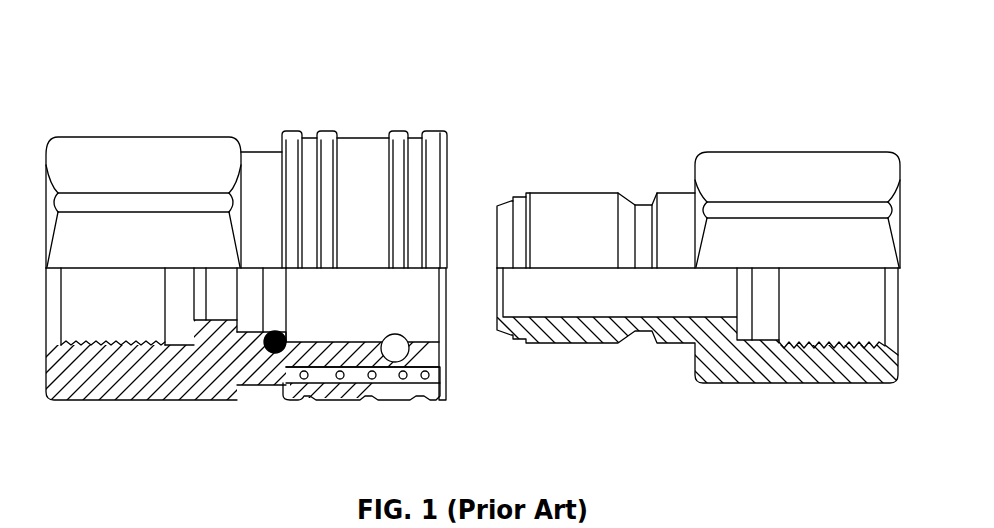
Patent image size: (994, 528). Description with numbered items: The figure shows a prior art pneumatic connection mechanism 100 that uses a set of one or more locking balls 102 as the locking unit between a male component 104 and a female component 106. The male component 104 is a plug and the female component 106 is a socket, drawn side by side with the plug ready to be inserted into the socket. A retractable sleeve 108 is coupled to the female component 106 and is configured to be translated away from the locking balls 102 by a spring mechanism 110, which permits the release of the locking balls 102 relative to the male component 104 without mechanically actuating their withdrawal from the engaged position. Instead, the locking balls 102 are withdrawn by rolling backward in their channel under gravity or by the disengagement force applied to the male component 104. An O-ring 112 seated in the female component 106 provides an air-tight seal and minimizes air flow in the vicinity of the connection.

The pneumatic connection mechanism 100 is at (214, 63).
The locking balls 102 is at (410, 360).
The male component 104 is at (798, 152).
The female component 106 is at (112, 137).
The retractable sleeve 108 is at (350, 133).
The spring mechanism 110 is at (330, 397).
The O-ring 112 is at (258, 382).